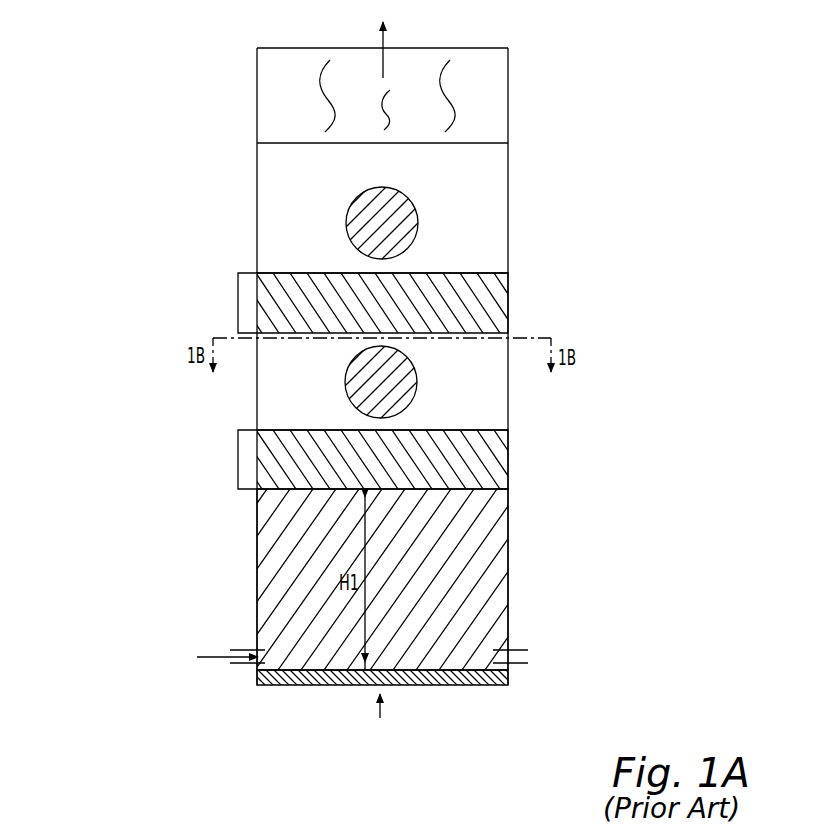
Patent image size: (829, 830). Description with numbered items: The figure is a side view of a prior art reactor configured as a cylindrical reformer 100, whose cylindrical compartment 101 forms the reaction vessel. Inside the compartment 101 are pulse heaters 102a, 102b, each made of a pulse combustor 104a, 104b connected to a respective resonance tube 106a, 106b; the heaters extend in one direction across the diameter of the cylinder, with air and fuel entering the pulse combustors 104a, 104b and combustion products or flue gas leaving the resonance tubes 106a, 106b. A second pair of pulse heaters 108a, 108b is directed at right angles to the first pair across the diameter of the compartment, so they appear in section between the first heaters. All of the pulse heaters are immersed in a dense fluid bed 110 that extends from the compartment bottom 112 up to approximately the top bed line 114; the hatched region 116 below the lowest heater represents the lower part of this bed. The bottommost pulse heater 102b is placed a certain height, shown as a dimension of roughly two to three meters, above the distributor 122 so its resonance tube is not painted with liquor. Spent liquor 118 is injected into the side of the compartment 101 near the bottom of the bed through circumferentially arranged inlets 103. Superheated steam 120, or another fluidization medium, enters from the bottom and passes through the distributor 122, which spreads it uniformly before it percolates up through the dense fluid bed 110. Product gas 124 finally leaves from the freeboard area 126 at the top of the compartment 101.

The cylindrical reformer 100 is at (80, 5).
The cylindrical compartment 101 is at (247, 158).
The pulse heater 102a is at (127, 258).
The pulse heater 102b is at (127, 413).
The inlets 103 is at (245, 648).
The pulse combustor 104a is at (245, 308).
The pulse combustor 104b is at (245, 465).
The resonance tube 106a is at (277, 273).
The resonance tube 106b is at (277, 430).
The pulse heater 108a is at (418, 217).
The pulse heater 108b is at (417, 385).
The dense fluid bed 110 is at (467, 254).
The compartment bottom 112 is at (458, 668).
The top bed line 114 is at (487, 143).
The bed of material 116 is at (430, 527).
The spent liquor 118 is at (215, 648).
The superheated steam 120 is at (382, 712).
The distributor 122 is at (508, 678).
The product gas 124 is at (386, 30).
The freeboard area 126 is at (495, 83).